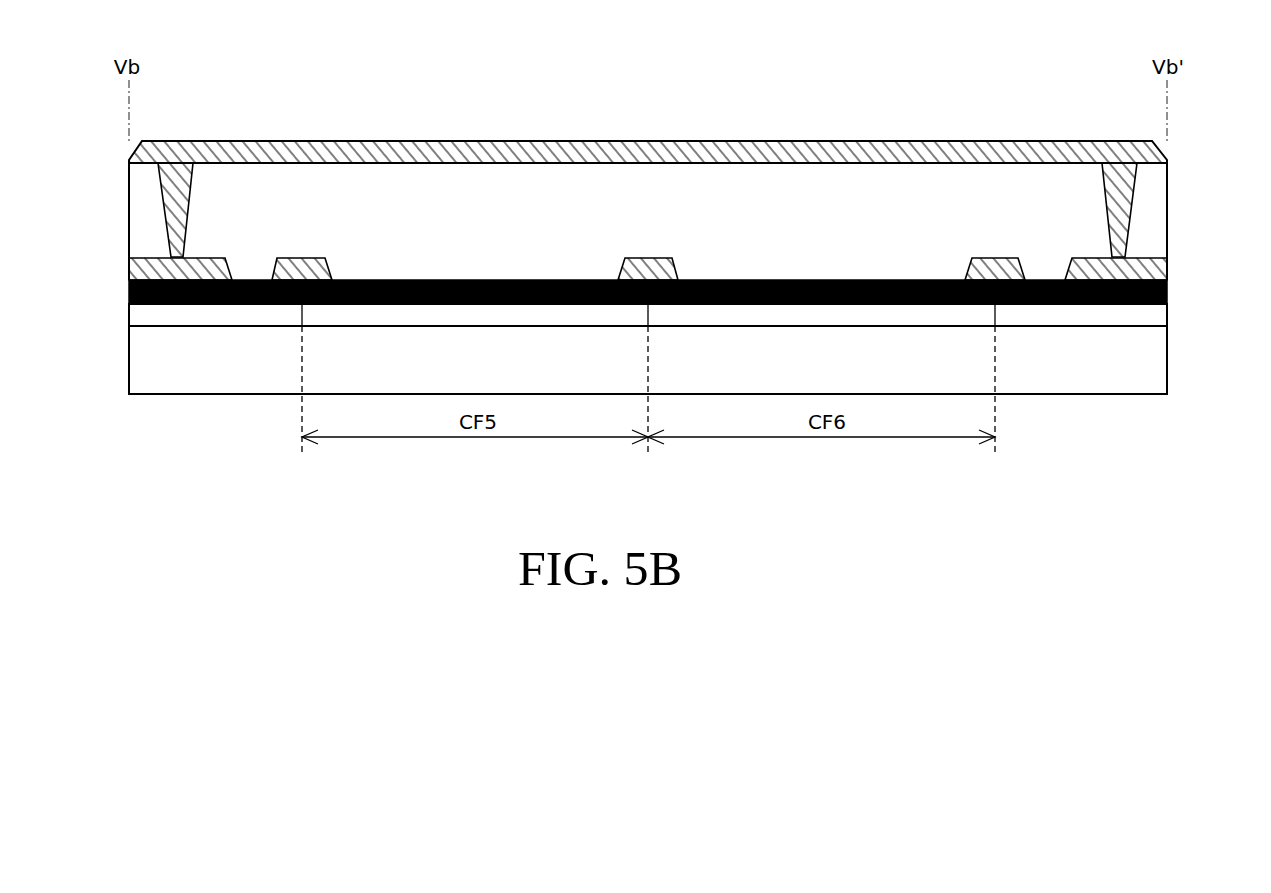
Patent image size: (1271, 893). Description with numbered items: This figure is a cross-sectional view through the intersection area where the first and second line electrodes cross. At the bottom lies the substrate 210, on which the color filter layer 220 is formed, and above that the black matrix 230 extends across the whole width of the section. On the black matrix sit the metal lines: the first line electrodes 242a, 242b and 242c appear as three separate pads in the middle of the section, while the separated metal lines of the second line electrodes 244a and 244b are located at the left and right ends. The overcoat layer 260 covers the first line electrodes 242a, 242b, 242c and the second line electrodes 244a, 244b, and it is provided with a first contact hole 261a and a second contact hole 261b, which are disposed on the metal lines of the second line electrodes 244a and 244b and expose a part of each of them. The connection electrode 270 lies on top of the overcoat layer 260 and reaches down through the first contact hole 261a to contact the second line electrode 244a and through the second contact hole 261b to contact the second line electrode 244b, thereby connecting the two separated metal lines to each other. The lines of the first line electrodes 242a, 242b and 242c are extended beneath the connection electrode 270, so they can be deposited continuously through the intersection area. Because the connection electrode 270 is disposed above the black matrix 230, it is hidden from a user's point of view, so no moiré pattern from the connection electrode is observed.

The substrate 210 is at (1143, 363).
The color filter layer 220 is at (1145, 316).
The black matrix 230 is at (1167, 291).
The first line electrode 242a is at (303, 277).
The first line electrode 242b is at (648, 280).
The first line electrode 242c is at (997, 280).
The second line electrode 244a is at (140, 272).
The second line electrode 244b is at (1145, 270).
The overcoat layer 260 is at (930, 187).
The first contact hole 261a is at (190, 215).
The second contact hole 261b is at (1105, 216).
The connection electrode 270 is at (146, 147).